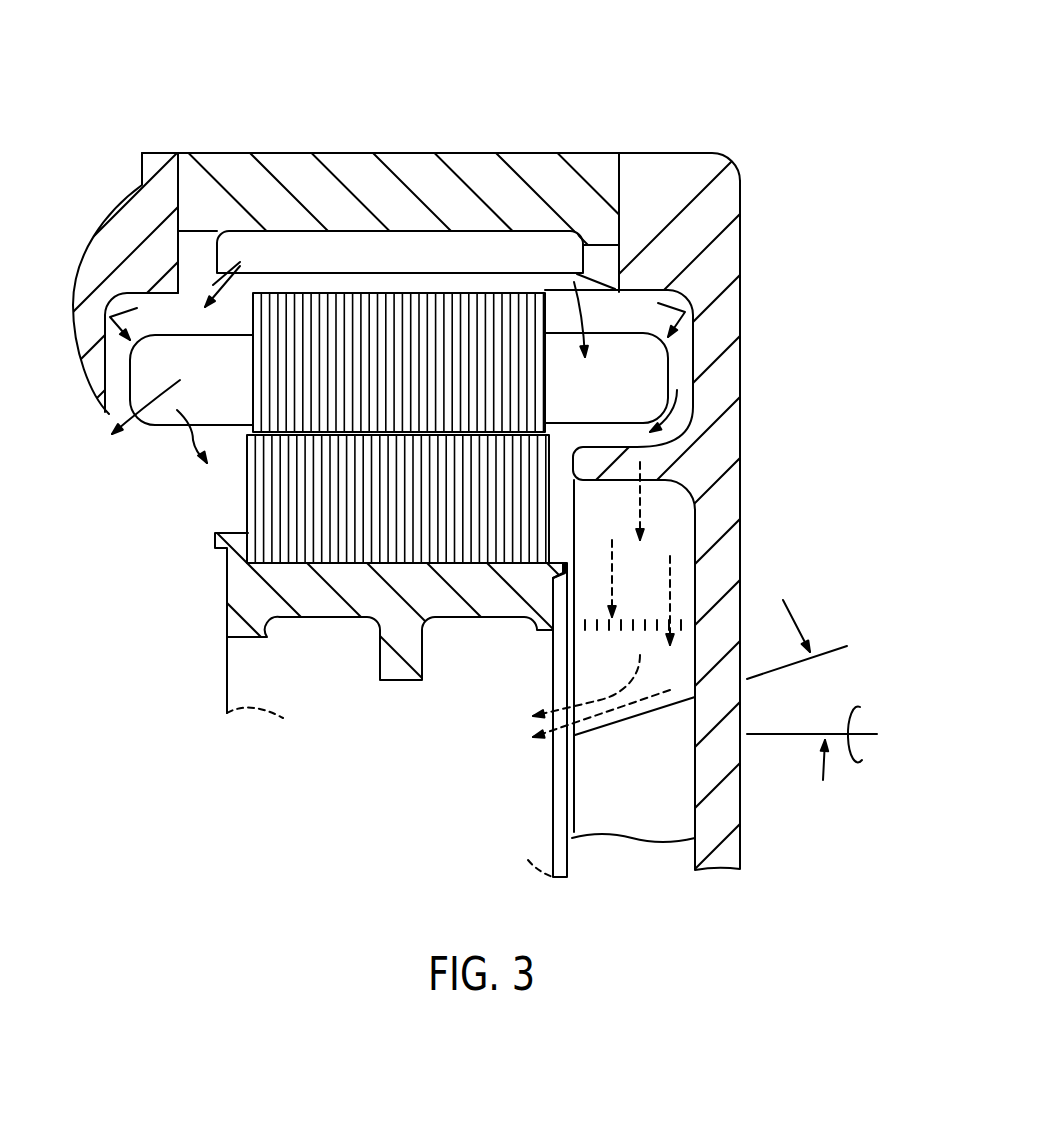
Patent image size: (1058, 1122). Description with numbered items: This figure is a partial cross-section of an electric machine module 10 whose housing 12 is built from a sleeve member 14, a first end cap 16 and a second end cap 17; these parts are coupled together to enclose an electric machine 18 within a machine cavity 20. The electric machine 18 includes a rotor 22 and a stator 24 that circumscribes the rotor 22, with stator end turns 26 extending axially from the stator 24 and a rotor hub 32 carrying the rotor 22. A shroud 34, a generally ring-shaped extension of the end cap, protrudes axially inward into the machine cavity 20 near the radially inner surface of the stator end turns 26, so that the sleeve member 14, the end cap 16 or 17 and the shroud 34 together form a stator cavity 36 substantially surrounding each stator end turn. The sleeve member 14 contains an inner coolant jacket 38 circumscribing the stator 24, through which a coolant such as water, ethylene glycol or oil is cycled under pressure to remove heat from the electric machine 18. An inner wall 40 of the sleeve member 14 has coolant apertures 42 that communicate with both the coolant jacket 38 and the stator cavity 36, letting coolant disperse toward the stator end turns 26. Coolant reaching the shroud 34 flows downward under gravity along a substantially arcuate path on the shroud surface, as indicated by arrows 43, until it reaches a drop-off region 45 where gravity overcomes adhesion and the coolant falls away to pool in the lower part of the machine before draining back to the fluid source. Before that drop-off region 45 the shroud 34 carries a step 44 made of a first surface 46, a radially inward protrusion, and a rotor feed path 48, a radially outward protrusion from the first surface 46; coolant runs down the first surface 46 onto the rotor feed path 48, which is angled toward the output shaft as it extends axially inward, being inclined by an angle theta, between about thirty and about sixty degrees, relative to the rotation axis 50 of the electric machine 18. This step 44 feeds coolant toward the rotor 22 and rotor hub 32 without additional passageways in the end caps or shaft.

The electric machine module 10 is at (661, 62).
The housing 12 is at (241, 152).
The sleeve member 14 is at (402, 160).
The first end cap 16 is at (142, 152).
The second end cap 17 is at (718, 160).
The electric machine 18 is at (415, 312).
The machine cavity 20 is at (561, 549).
The rotor 22 is at (300, 537).
The stator 24 is at (300, 420).
The stator end turns 26 is at (170, 417).
The rotor hub 32 is at (327, 608).
The shroud 34 is at (633, 462).
The stator cavity 36 is at (176, 315).
The inner coolant jacket 38 is at (310, 240).
The inner wall 40 is at (503, 270).
The coolant apertures 42 is at (210, 281).
The arrows 43 is at (130, 425).
The step 44 is at (650, 716).
The drop-off region 45 is at (673, 871).
The first surface 46 is at (587, 675).
The rotor feed path 48 is at (597, 733).
The rotation axis 50 is at (863, 737).